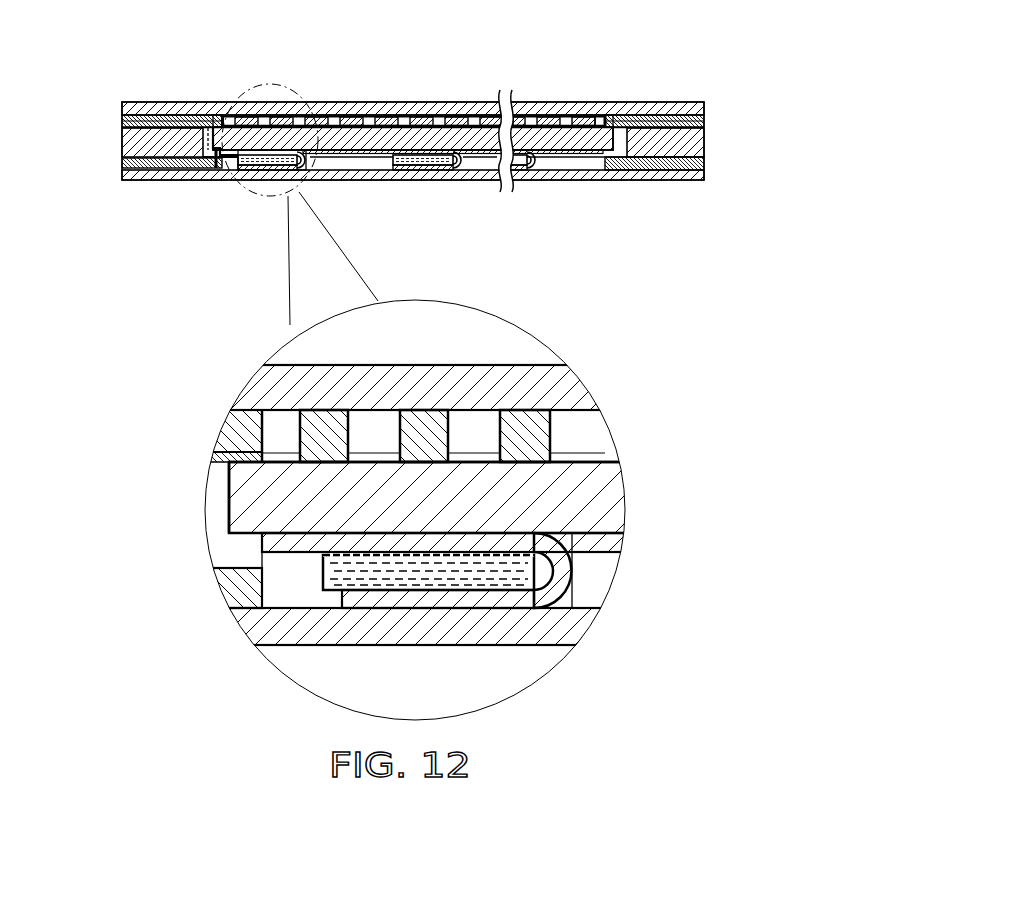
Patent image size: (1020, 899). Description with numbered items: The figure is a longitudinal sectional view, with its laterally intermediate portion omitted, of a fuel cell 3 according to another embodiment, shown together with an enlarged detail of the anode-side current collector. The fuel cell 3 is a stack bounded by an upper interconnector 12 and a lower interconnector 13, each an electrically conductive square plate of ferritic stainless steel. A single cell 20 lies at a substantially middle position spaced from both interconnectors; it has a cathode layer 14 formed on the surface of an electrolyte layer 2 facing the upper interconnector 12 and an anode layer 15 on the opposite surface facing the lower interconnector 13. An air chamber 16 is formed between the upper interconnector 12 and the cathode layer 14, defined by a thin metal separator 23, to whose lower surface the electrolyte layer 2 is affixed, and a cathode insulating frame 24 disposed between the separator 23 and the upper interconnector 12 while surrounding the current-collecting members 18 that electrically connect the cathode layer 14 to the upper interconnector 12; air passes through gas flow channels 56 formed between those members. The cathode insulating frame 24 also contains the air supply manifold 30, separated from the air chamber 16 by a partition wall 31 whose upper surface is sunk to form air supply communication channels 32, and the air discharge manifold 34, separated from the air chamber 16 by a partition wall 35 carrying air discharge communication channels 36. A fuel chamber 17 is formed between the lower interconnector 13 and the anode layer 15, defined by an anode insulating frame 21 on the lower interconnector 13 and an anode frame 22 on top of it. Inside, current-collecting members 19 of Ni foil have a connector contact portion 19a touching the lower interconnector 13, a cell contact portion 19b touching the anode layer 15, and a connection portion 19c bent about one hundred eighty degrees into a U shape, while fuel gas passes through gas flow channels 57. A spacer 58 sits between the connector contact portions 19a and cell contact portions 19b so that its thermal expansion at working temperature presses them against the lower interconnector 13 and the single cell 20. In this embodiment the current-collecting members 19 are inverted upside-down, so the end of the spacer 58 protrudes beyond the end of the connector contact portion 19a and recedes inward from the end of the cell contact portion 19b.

The fuel cell 3 is at (727, 62).
The electrolyte layer 2 is at (548, 151).
The upper interconnector 12 is at (462, 108).
The lower interconnector 13 is at (484, 180).
The cathode layer 14 is at (363, 117).
The anode layer 15 is at (363, 153).
The air chamber 16 is at (480, 120).
The fuel chamber 17 is at (598, 165).
The current-collecting members on the cathode layer side 18 is at (402, 117).
The current-collecting members on the anode layer side 19 is at (233, 170).
The connector contact portion 19a is at (263, 172).
The cell contact portion 19b is at (281, 150).
The connection portion 19c is at (297, 167).
The single cell 20 is at (343, 134).
The anode insulating frame 21 is at (122, 165).
The anode frame 22 is at (178, 140).
The separator 23 is at (122, 127).
The cathode insulating frame 24 is at (703, 120).
The air supply manifold 30 is at (668, 117).
The partition wall 31 is at (613, 117).
The air supply communication channels 32 is at (623, 117).
The air discharge manifold 34 is at (160, 122).
The partition wall 35 is at (188, 118).
The air discharge communication channels 36 is at (223, 116).
The gas flow channels 56 is at (545, 120).
The gas flow channels 57 is at (557, 166).
The spacer 58 is at (273, 162).